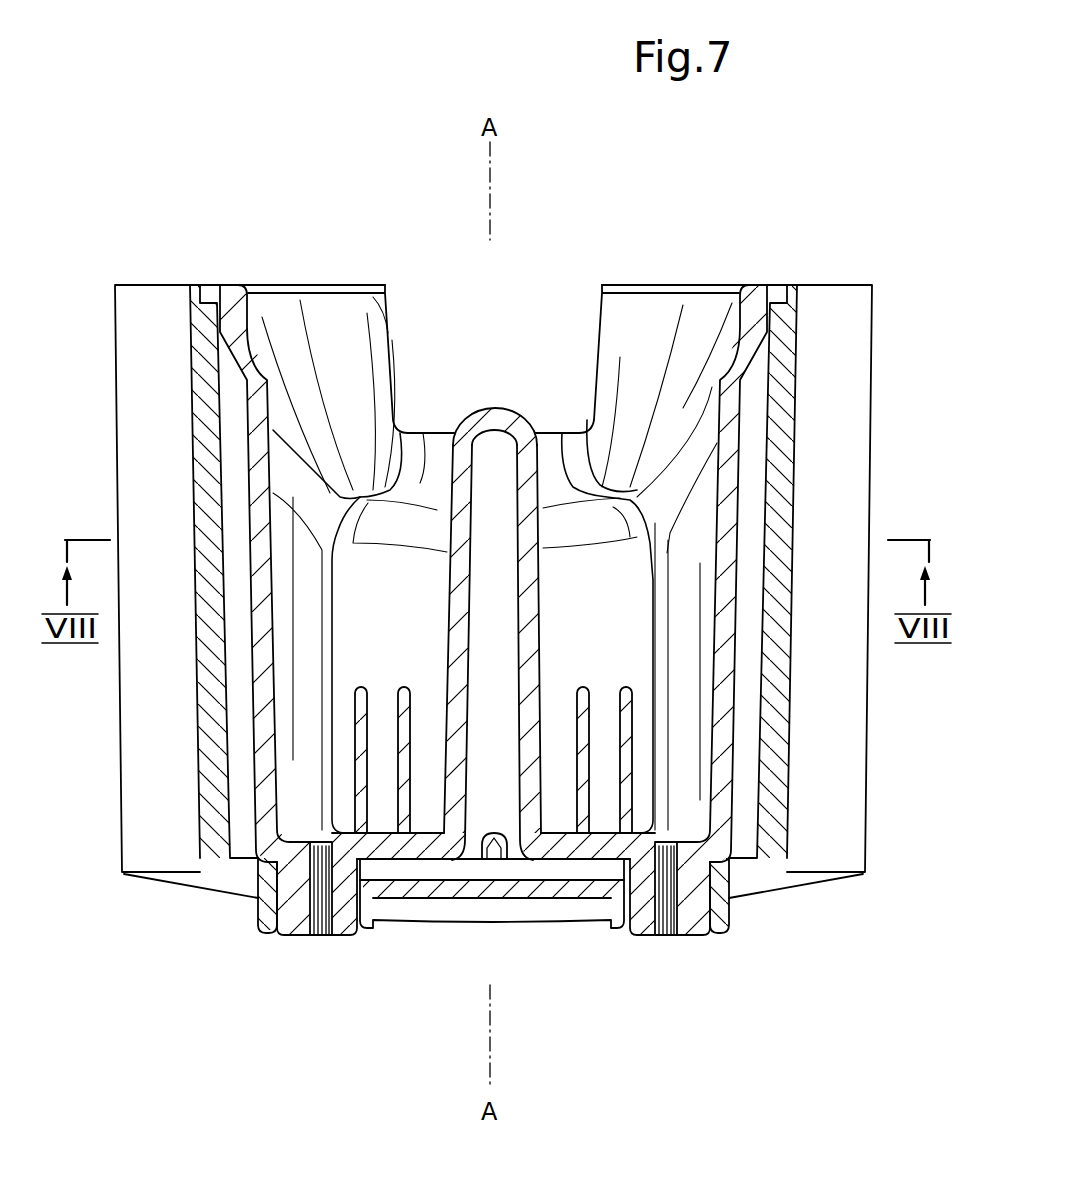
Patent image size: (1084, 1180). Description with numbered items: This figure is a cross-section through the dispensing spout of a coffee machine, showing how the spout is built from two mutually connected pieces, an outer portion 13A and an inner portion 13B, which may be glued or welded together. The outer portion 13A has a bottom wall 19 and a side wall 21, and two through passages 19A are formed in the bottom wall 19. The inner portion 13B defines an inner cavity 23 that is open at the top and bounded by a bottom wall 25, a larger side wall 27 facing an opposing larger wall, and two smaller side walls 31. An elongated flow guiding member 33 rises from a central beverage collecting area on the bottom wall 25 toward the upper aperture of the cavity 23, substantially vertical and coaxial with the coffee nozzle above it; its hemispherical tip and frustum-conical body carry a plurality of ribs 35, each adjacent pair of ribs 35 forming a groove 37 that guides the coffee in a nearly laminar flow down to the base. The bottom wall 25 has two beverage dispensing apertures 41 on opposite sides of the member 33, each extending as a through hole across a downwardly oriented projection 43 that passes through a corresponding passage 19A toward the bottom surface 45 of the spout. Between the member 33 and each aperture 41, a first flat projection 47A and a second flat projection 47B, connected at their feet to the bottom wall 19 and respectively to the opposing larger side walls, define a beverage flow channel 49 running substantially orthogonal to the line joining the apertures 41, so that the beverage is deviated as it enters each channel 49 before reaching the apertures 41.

The outer portion 13A is at (493, 591).
The inner portion 13B is at (493, 625).
The bottom wall 19 is at (542, 897).
The through passages 19A is at (284, 920).
The side wall 21 is at (198, 700).
The inner cavity 23 is at (443, 455).
The bottom wall 25 is at (430, 848).
The larger side wall 27 is at (413, 627).
The smaller side walls 31 is at (262, 580).
The elongated flow guiding member 33 is at (532, 606).
The ribs 35 is at (532, 416).
The groove 37 is at (478, 414).
The beverage dispensing apertures 41 is at (311, 841).
The downwardly oriented projection 43 is at (347, 936).
The bottom surface 45 is at (315, 936).
The first flat projection 47A is at (359, 690).
The second flat projection 47B is at (408, 704).
The beverage flow channel 49 is at (397, 772).